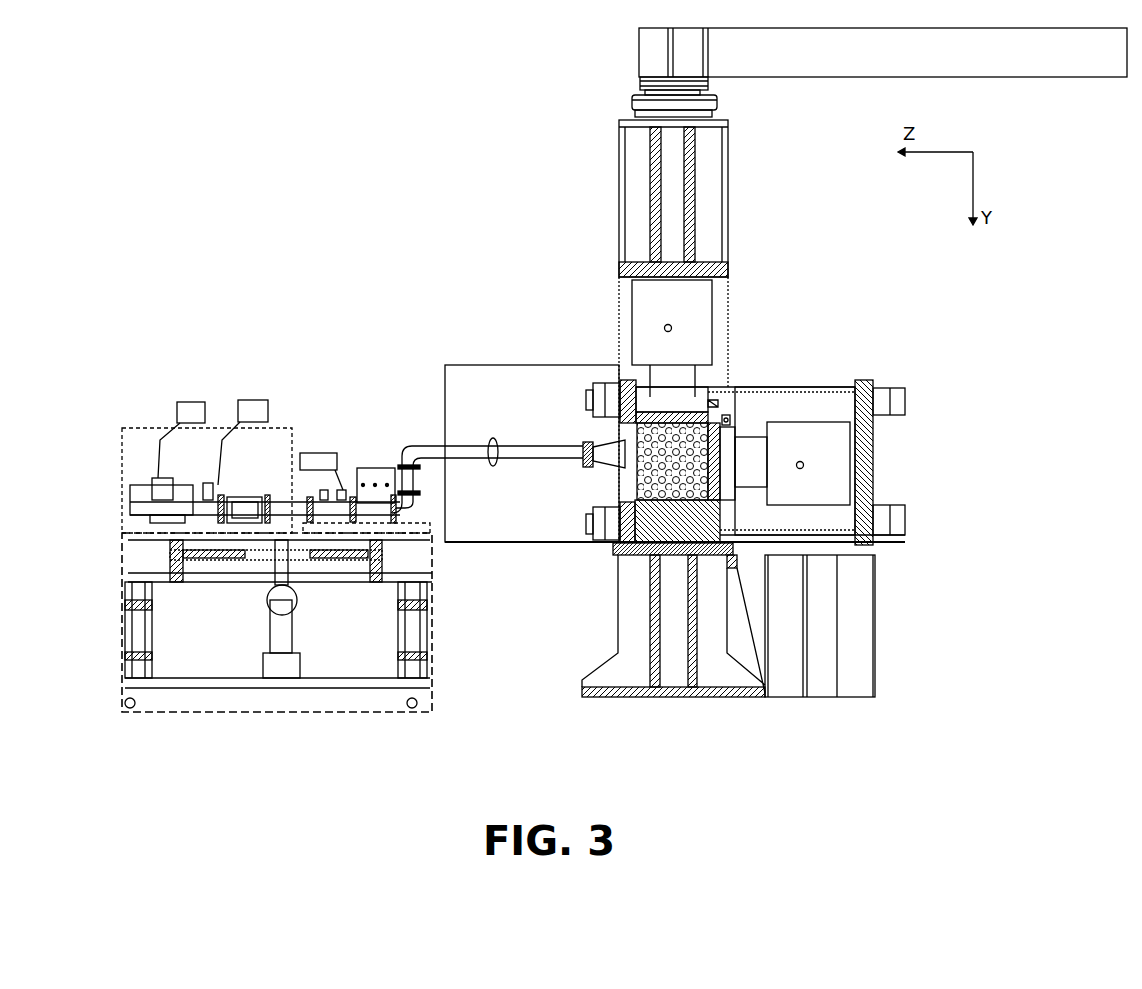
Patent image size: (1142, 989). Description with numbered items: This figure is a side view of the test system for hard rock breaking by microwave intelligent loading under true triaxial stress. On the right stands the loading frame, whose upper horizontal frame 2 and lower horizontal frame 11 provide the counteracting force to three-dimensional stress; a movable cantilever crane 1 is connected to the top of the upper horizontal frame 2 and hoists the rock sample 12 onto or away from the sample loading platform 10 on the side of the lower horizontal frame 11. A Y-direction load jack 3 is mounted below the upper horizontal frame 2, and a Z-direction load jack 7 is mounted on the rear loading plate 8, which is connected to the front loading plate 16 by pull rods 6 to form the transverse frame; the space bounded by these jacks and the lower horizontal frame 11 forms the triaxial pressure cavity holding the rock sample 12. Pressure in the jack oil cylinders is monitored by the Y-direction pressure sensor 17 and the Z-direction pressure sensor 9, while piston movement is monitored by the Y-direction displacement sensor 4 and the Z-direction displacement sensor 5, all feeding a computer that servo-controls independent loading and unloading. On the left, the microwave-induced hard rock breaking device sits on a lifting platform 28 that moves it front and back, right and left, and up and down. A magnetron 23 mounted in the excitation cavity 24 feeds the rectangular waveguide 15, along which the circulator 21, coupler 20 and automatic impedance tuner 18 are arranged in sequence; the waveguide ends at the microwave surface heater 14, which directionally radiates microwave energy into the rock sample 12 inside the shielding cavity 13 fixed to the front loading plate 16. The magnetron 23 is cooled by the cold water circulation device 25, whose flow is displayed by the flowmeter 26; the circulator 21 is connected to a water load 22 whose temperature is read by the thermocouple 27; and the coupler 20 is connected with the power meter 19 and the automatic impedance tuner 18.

The movable cantilever crane 1 is at (780, 57).
The upper horizontal frame 2 is at (707, 163).
The Y-direction load jack 3 is at (698, 297).
The Y-direction displacement sensor 4 is at (710, 402).
The Z-direction displacement sensor 5 is at (728, 417).
The pull rods 6 is at (798, 395).
The Z-direction load jack 7 is at (825, 442).
The rear loading plate 8 is at (893, 448).
The Z-direction pressure sensor 9 is at (803, 468).
The sample loading platform 10 is at (842, 643).
The lower horizontal frame 11 is at (617, 648).
The rock sample 12 is at (672, 475).
The shielding cavity 13 is at (502, 540).
The microwave surface heater 14 is at (600, 443).
The rectangular waveguide 15 is at (528, 445).
The front loading plate 16 is at (630, 382).
The Y-direction pressure sensor 17 is at (665, 326).
The automatic impedance tuner 18 is at (378, 478).
The power meter 19 is at (323, 462).
The coupler 20 is at (322, 497).
The circulator 21 is at (252, 503).
The water load 22 is at (210, 488).
The magnetron 23 is at (170, 473).
The excitation cavity 24 is at (148, 493).
The cold water circulation device 25 is at (142, 438).
The flowmeter 26 is at (193, 413).
The thermocouple 27 is at (255, 410).
The lifting platform 28 is at (417, 647).